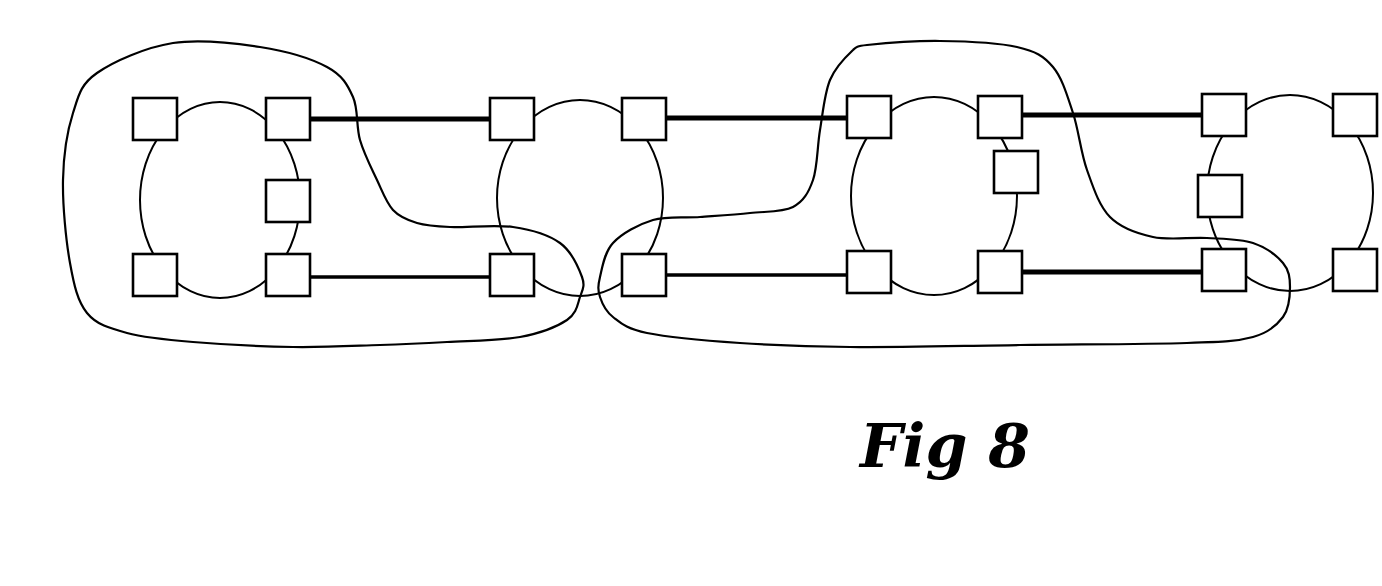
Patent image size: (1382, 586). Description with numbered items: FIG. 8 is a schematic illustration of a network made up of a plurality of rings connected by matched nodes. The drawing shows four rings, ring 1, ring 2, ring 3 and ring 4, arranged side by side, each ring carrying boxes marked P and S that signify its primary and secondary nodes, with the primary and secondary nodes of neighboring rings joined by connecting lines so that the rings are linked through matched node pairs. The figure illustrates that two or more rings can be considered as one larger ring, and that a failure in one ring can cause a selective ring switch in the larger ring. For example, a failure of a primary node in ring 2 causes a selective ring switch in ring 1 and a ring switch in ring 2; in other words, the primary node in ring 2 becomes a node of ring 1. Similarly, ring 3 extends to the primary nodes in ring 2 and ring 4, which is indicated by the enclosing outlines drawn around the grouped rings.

The ring 1 is at (221, 197).
The ring 2 is at (578, 197).
The ring 3 is at (942, 195).
The ring 4 is at (1287, 193).